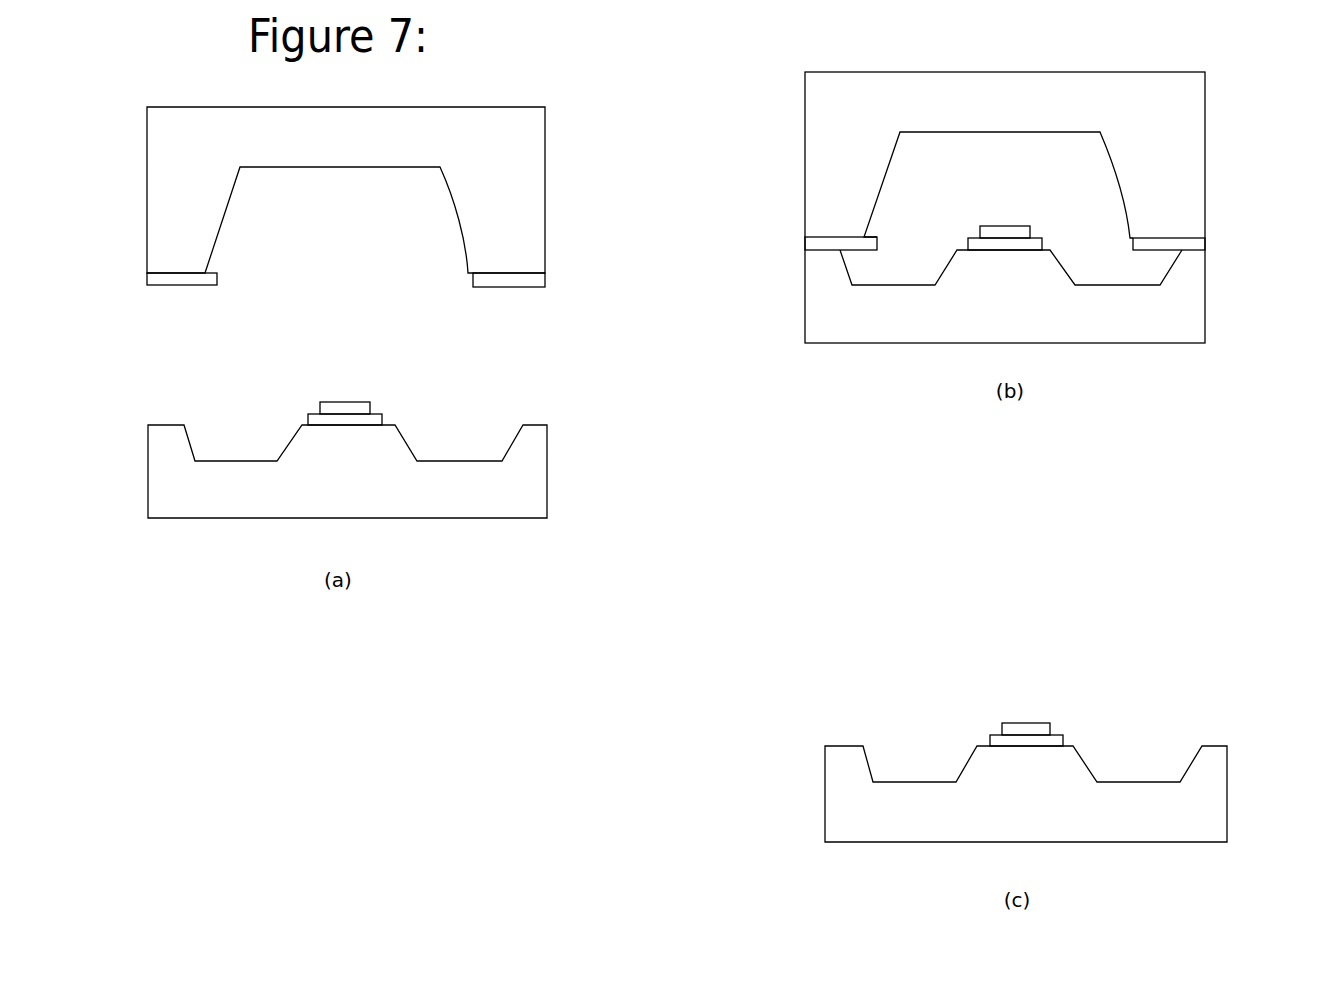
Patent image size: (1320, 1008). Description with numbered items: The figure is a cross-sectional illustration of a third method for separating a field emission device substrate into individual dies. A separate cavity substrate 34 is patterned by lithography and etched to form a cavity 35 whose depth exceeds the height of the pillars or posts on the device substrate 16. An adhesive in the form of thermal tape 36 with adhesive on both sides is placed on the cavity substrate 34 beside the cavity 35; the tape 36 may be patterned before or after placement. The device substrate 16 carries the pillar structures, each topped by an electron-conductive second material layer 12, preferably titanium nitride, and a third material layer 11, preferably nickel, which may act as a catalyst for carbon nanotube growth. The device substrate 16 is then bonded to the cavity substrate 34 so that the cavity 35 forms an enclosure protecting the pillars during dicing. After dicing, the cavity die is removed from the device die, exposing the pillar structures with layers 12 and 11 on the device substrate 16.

The third material layer 11 is at (348, 400).
The second material layer 12 is at (308, 410).
The device substrate 16 is at (157, 487).
The cavity substrate 34 is at (172, 147).
The cavity 35 is at (332, 195).
The thermal tape 36 is at (157, 287).